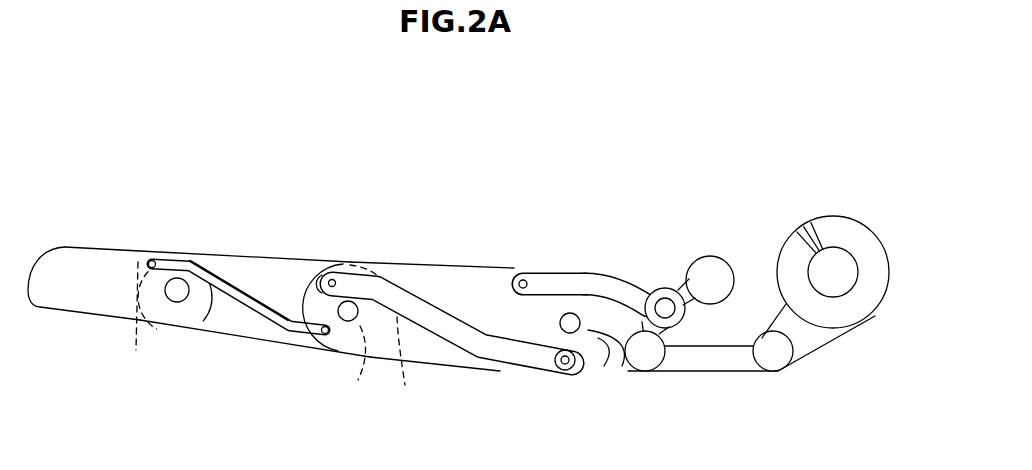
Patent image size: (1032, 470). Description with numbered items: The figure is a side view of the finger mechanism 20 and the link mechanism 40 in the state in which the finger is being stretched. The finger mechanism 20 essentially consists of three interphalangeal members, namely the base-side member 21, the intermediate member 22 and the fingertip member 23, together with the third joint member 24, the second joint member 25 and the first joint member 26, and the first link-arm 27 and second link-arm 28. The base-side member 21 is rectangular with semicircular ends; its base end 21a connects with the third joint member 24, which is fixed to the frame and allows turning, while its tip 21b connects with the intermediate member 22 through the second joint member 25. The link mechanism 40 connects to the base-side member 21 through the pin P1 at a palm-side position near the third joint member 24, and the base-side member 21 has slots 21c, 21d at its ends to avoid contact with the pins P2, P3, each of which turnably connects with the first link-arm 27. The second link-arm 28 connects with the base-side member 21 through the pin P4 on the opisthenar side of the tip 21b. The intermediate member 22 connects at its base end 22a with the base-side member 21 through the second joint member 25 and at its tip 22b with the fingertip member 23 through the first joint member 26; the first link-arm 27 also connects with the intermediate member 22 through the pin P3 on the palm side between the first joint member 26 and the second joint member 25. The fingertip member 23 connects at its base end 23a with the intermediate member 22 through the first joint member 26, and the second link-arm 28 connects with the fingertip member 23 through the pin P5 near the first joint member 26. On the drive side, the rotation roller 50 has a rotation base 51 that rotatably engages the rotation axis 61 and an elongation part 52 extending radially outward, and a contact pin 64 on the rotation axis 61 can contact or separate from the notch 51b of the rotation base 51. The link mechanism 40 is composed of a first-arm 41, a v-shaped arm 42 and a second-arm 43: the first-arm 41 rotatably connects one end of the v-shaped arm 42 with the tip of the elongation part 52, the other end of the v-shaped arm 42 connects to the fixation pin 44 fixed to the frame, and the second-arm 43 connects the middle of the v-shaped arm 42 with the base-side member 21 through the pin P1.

The finger mechanism 20 is at (370, 185).
The base-side member 21 is at (447, 293).
The base end 21a is at (598, 316).
The tip 21b is at (320, 268).
The slot 21c is at (600, 347).
The slot 21d is at (400, 366).
The intermediate member 22 is at (262, 277).
The base end 22a is at (352, 358).
The tip 22b is at (162, 314).
The fingertip member 23 is at (103, 270).
The base end 23a is at (197, 306).
The third joint member 24 is at (570, 323).
The second joint member 25 is at (348, 312).
The first joint member 26 is at (177, 292).
The first link-arm 27 is at (467, 340).
The second link-arm 28 is at (217, 280).
The link mechanism 40 is at (722, 209).
The first-arm 41 is at (713, 357).
The v-shaped arm 42 is at (678, 282).
The second-arm 43 is at (563, 285).
The fixation pin 44 is at (705, 272).
The rotation roller 50 is at (832, 205).
The rotation base 51 is at (857, 237).
The notch 51b is at (790, 250).
The elongation part 52 is at (808, 337).
The rotation axis 61 is at (832, 273).
The contact pin 64 is at (797, 232).
The pin P1 is at (523, 280).
The pin P2 is at (565, 370).
The pin P3 is at (334, 278).
The pin P4 is at (287, 333).
The pin P5 is at (153, 260).